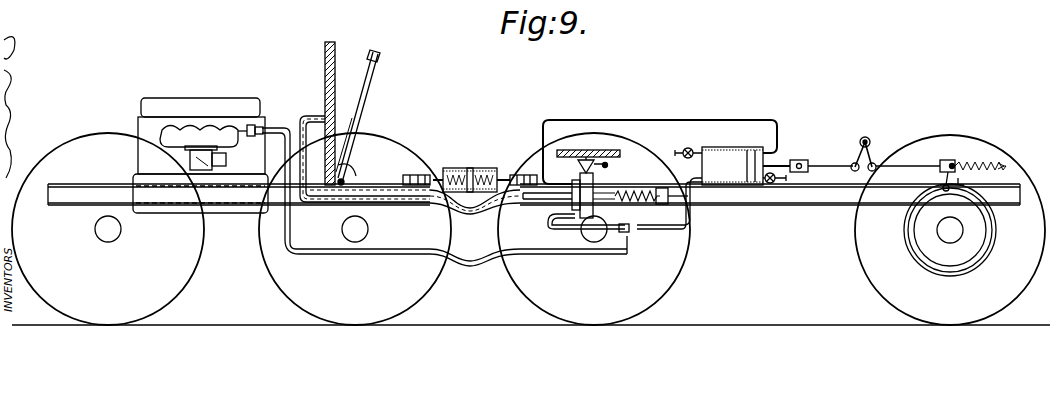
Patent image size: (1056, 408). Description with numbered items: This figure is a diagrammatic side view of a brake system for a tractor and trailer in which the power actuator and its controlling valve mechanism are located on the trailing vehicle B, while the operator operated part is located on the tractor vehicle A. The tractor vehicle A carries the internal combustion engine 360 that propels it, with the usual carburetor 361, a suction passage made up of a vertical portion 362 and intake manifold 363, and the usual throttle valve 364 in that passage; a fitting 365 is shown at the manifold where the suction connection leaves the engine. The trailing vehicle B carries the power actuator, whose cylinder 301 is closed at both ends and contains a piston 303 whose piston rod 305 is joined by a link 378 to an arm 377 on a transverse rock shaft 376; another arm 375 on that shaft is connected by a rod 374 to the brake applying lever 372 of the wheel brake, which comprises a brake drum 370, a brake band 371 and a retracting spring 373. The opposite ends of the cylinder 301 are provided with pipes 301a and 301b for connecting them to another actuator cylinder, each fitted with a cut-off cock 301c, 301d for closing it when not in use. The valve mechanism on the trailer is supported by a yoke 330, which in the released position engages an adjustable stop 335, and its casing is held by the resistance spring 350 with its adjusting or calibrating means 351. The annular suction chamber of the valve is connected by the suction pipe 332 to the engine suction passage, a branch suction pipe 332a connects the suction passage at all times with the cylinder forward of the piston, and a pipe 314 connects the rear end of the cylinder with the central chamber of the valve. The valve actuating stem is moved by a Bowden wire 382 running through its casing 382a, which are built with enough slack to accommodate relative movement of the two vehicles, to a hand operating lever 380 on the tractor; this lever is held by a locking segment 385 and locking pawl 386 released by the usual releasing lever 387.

The internal combustion engine 360 is at (165, 91).
The carburetor 361 is at (222, 171).
The vertical portion of suction passage 362 is at (197, 160).
The intake manifold 363 is at (189, 128).
The throttle valve 364 is at (196, 165).
The exhaust fitting 365 is at (253, 124).
The brake drum 370 is at (928, 258).
The brake band 371 is at (910, 250).
The brake applying lever 372 is at (950, 163).
The retracting spring 373 is at (985, 165).
The rod 374 is at (908, 165).
The arm 375 is at (873, 162).
The transverse rock shaft 376 is at (866, 138).
The arm 377 is at (856, 162).
The link 378 is at (827, 164).
The hand operating lever 380 is at (366, 72).
The Bowden wire 382 is at (536, 208).
The Bowden wire casing 382a is at (313, 117).
The locking segment 385 is at (355, 180).
The locking pawl 386 is at (350, 165).
The releasing lever 387 is at (382, 58).
The yoke 330 is at (580, 185).
The suction pipe 332 is at (478, 266).
The branch suction pipe 332a is at (692, 230).
The adjustable stop 335 is at (588, 165).
The resistance spring 350 is at (620, 195).
The adjusting means 351 is at (660, 205).
The pipe 314 is at (625, 122).
The actuator cylinder 301 is at (750, 140).
The pipe 301a is at (745, 124).
The pipe 301b is at (788, 183).
The cut-off cock 301c is at (690, 148).
The cut-off cock 301d is at (771, 184).
The piston 303 is at (752, 186).
The piston rod 305 is at (772, 173).
The tractor vehicle A is at (58, 198).
The trailing vehicle B is at (850, 204).